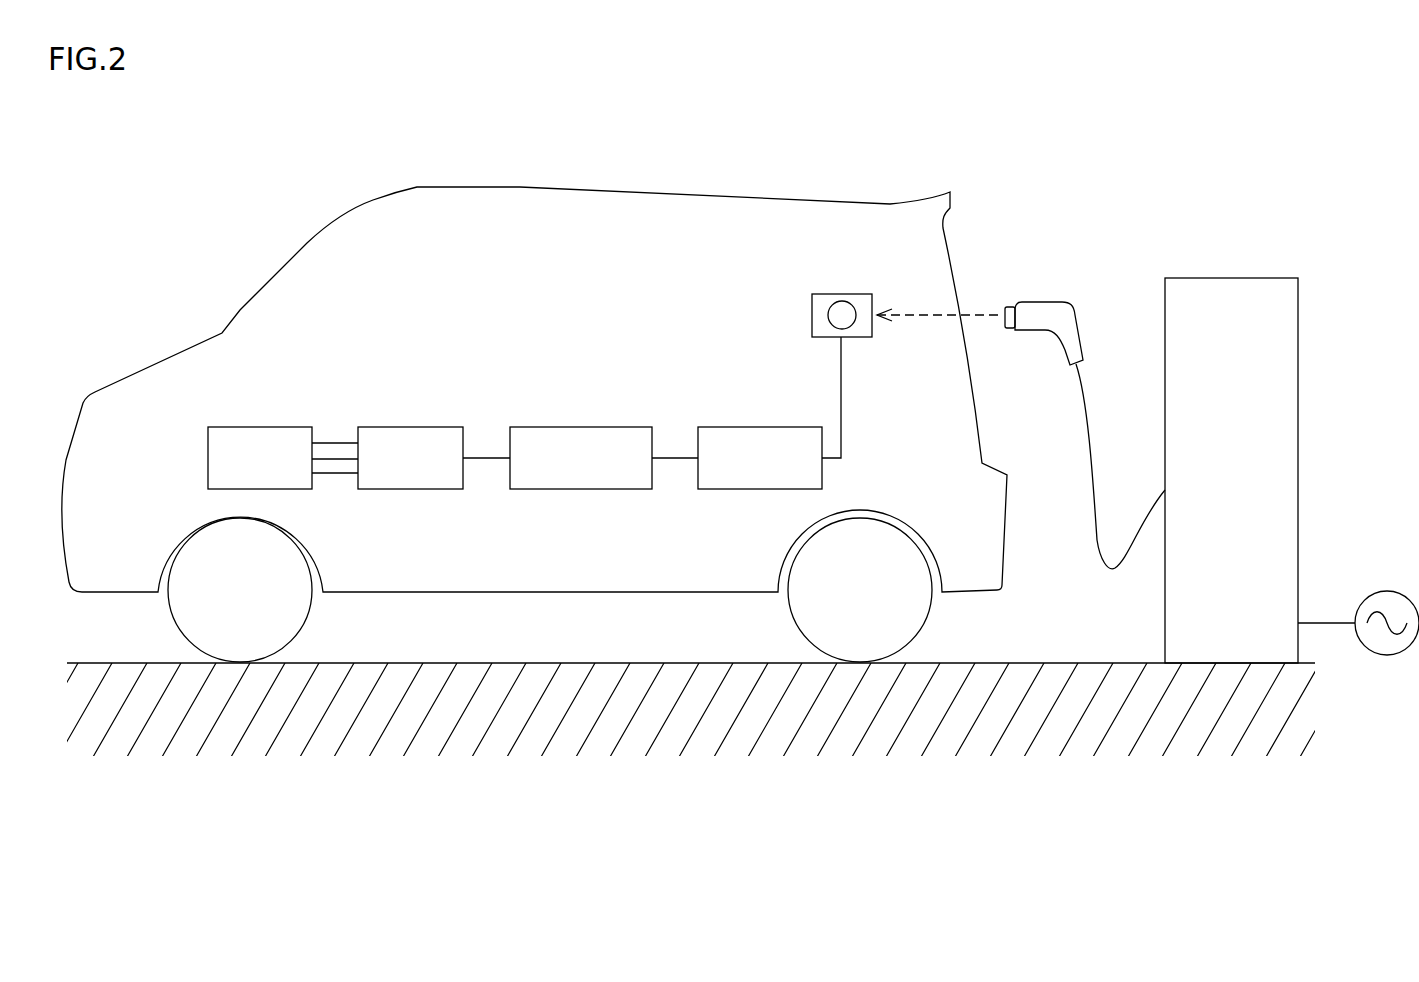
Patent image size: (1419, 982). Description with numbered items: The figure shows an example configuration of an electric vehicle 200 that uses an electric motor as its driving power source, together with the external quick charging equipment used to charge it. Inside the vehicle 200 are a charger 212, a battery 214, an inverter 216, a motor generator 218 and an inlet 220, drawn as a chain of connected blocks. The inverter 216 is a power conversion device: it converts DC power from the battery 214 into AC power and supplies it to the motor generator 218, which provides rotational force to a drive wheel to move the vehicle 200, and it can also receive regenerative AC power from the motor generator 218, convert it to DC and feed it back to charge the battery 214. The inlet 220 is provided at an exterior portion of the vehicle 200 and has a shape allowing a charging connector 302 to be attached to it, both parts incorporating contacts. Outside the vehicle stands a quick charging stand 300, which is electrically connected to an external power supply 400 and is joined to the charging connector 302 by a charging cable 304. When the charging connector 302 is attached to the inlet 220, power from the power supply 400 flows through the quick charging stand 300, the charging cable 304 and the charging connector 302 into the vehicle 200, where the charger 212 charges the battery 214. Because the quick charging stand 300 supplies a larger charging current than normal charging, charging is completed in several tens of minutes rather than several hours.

The vehicle 200 is at (653, 192).
The charger 212 is at (768, 427).
The battery 214 is at (580, 427).
The inverter 216 is at (410, 427).
The motor generator 218 is at (260, 427).
The inlet 220 is at (287, 540).
The quick charging stand 300 is at (1248, 278).
The charging connector 302 is at (1043, 302).
The charging cable 304 is at (1117, 571).
The external power supply 400 is at (1385, 591).